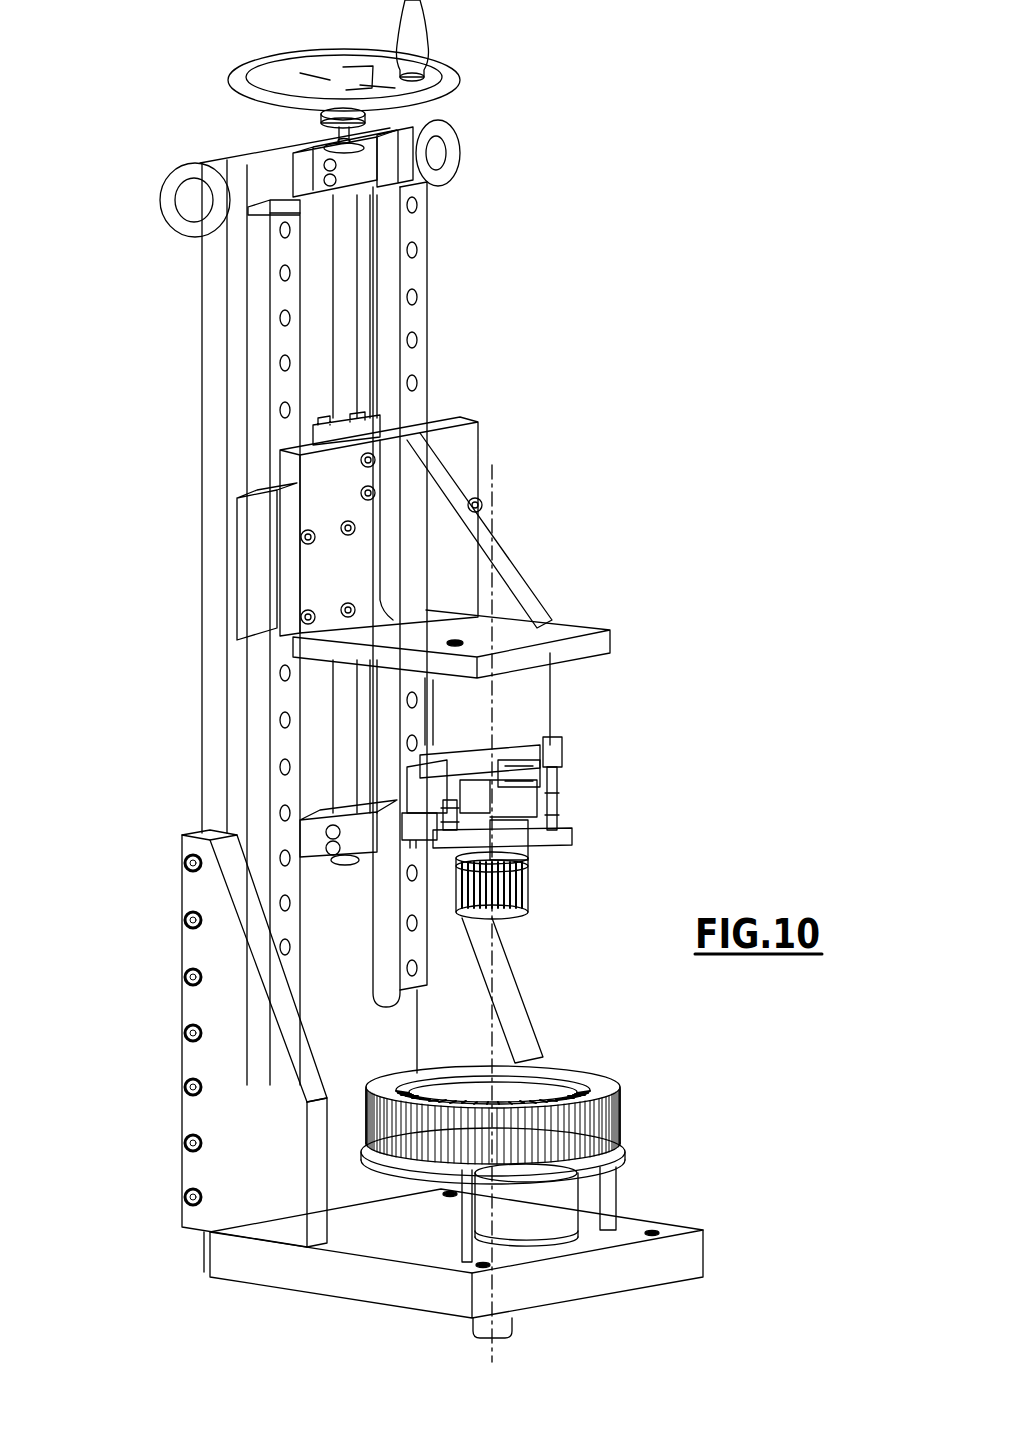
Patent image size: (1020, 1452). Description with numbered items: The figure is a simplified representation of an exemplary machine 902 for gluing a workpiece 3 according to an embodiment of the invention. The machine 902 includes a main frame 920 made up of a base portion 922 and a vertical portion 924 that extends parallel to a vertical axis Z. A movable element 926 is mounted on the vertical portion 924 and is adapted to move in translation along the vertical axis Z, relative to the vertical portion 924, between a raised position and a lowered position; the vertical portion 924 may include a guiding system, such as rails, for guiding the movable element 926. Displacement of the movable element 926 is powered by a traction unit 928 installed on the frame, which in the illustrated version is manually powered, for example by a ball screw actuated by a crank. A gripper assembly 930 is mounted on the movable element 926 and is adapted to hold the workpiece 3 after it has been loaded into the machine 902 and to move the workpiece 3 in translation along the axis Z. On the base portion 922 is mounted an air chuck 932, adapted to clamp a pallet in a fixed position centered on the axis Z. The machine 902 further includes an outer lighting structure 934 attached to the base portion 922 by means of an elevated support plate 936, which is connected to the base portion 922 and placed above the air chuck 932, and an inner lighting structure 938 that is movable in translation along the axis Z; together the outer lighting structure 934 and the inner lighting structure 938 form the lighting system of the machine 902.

The workpiece 3 is at (532, 863).
The machine 902 is at (580, 194).
The main frame 920 is at (122, 727).
The base portion 922 is at (650, 1265).
The vertical portion 924 is at (213, 385).
The movable element 926 is at (455, 455).
The traction unit 928 is at (345, 127).
The gripper assembly 930 is at (553, 760).
The air chuck 932 is at (425, 1207).
The outer lighting structure 934 is at (620, 1117).
The elevated support plate 936 is at (620, 1157).
The inner lighting structure 938 is at (502, 1330).
The vertical axis Z is at (493, 490).